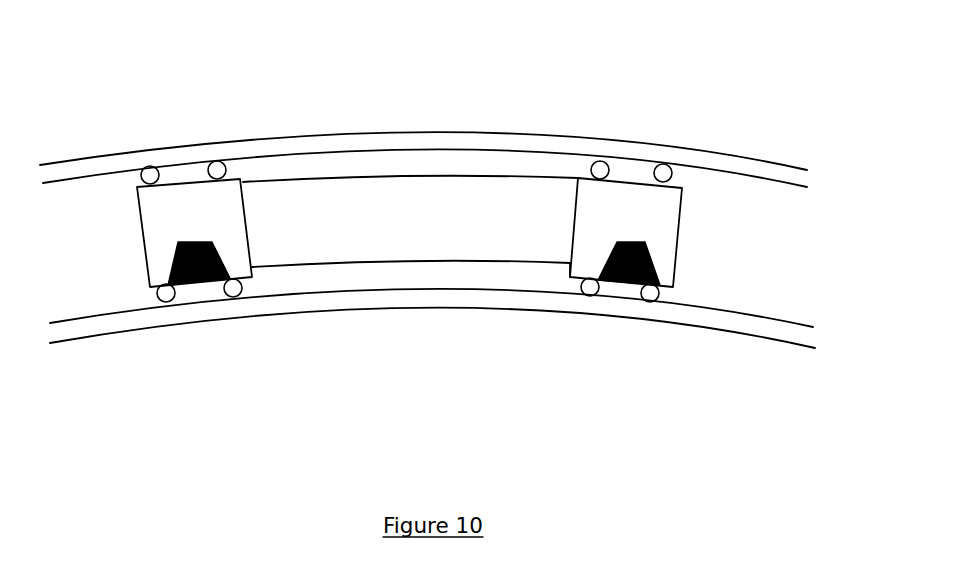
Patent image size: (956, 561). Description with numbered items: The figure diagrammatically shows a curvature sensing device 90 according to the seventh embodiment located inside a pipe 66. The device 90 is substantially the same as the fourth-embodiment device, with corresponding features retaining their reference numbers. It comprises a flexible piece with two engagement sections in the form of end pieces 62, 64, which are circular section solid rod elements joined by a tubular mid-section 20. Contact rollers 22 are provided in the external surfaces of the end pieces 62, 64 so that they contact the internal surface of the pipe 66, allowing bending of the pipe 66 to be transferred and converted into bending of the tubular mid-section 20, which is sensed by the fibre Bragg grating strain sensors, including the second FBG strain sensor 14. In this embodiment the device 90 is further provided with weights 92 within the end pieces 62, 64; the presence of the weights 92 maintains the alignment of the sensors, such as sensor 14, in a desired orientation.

The second FBG strain sensor 14 is at (382, 218).
The tubular mid-section 20 is at (305, 248).
The contact rollers 22 is at (667, 177).
The end piece 62 is at (187, 212).
The end piece 64 is at (637, 197).
The pipe 66 is at (787, 183).
The curvature sensing device 90 is at (470, 170).
The weights 92 is at (203, 282).